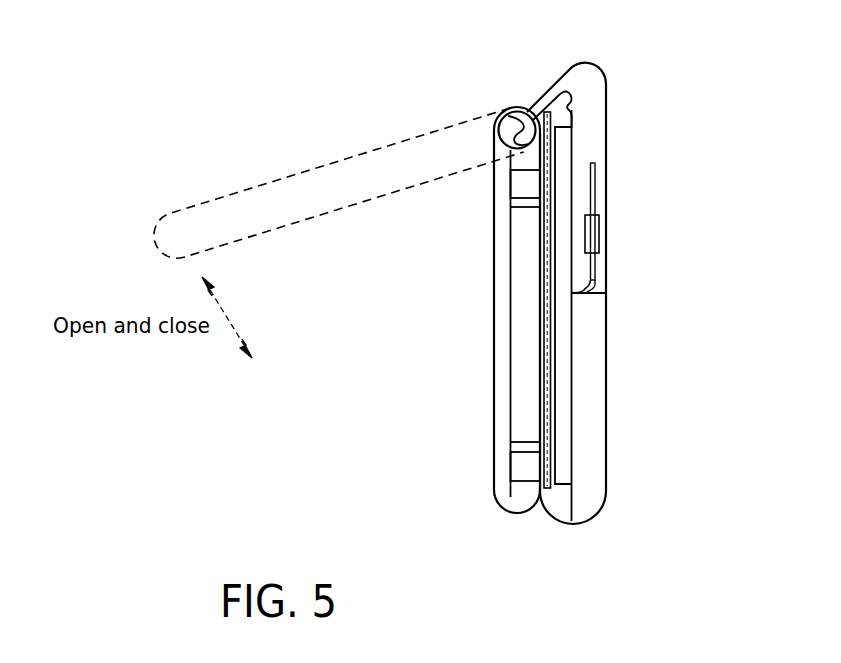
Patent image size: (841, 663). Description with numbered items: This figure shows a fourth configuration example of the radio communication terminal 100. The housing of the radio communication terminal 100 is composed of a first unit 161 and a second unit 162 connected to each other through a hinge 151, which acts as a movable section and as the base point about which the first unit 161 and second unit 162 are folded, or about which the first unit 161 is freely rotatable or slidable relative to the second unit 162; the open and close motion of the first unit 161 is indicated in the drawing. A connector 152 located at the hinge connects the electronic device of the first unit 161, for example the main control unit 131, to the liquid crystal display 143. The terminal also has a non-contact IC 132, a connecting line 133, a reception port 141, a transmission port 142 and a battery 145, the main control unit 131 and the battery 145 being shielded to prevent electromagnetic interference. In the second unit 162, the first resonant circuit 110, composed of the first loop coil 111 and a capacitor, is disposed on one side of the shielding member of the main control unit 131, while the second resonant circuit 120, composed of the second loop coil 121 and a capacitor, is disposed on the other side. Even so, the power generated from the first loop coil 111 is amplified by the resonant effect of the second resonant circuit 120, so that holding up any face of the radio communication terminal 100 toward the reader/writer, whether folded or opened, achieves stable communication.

The radio communication terminal 100 is at (585, 543).
The first resonant circuit 110 is at (590, 268).
The first loop coil 111 is at (593, 221).
The second resonant circuit 120 is at (548, 383).
The second loop coil 121 is at (547, 300).
The main control unit 131 is at (562, 132).
The non-contact IC 132 is at (596, 232).
The connecting line 133 is at (604, 295).
The reception port 141 is at (527, 467).
The transmission port 142 is at (517, 187).
The liquid crystal display 143 is at (527, 327).
The battery 145 is at (587, 480).
The hinge 151 is at (503, 114).
The connector 152 is at (531, 110).
The first unit 161 is at (503, 270).
The second unit 162 is at (592, 120).